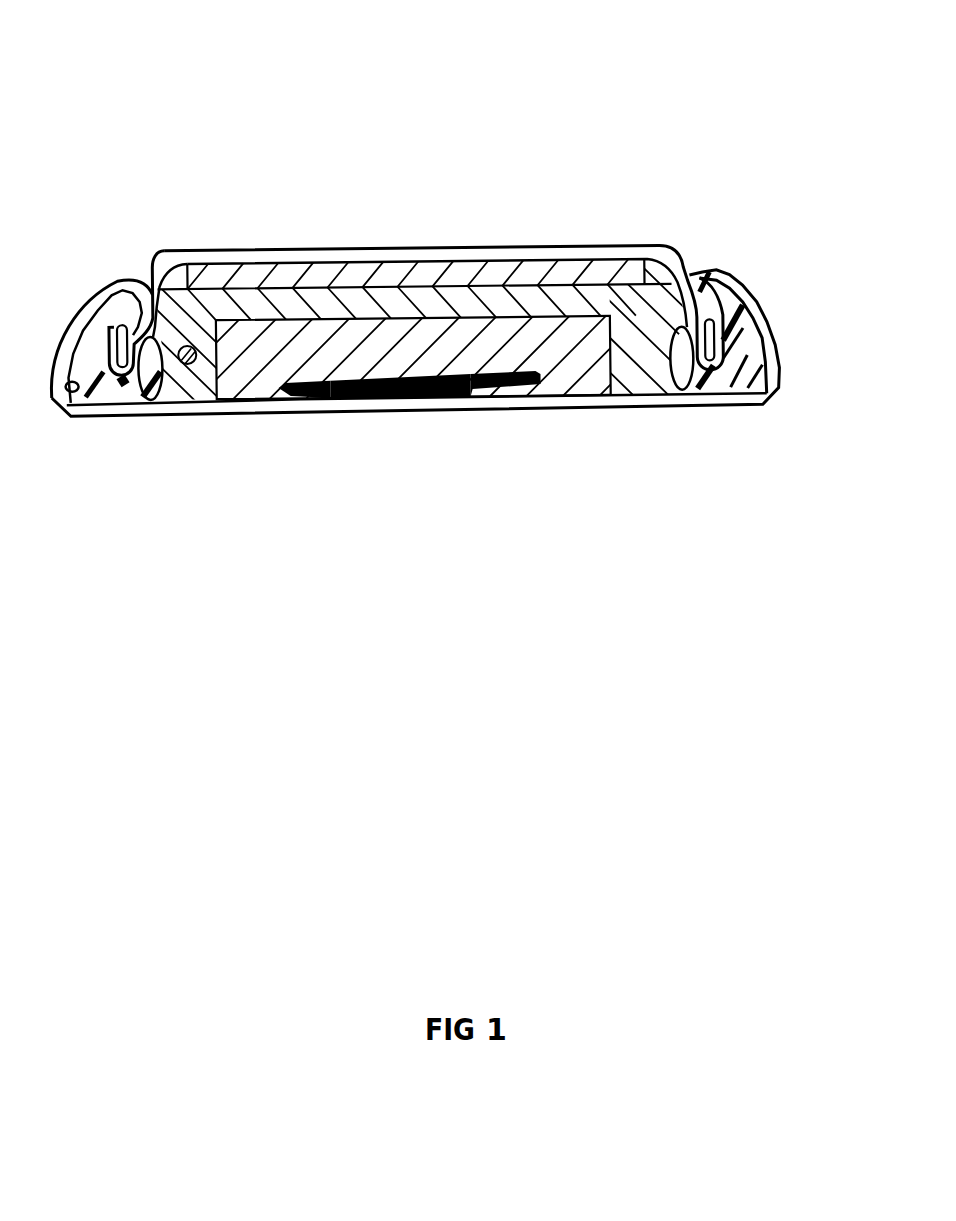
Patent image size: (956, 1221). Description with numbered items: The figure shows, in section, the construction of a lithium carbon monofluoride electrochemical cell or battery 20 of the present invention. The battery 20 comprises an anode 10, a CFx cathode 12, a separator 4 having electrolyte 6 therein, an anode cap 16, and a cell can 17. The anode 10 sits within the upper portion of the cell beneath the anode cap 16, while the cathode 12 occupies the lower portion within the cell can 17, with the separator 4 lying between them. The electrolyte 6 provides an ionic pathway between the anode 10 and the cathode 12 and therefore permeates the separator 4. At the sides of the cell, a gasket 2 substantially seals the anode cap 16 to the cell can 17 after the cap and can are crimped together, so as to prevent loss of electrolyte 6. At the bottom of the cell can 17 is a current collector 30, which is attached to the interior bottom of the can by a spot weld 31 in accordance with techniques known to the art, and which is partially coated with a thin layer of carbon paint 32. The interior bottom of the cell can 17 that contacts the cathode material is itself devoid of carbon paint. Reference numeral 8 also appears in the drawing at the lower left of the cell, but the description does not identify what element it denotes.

The battery 20 is at (345, 182).
The anode cap 16 is at (164, 250).
The anode 10 is at (569, 277).
The CFx cathode 12 is at (382, 337).
The separator 4 is at (643, 375).
The electrolyte 6 is at (188, 362).
The contact tabs 8 is at (110, 388).
The cell can 17 is at (745, 311).
The gasket 2 is at (753, 372).
The current collector 30 is at (530, 376).
The spot weld 31 is at (370, 397).
The carbon paint 32 is at (313, 389).